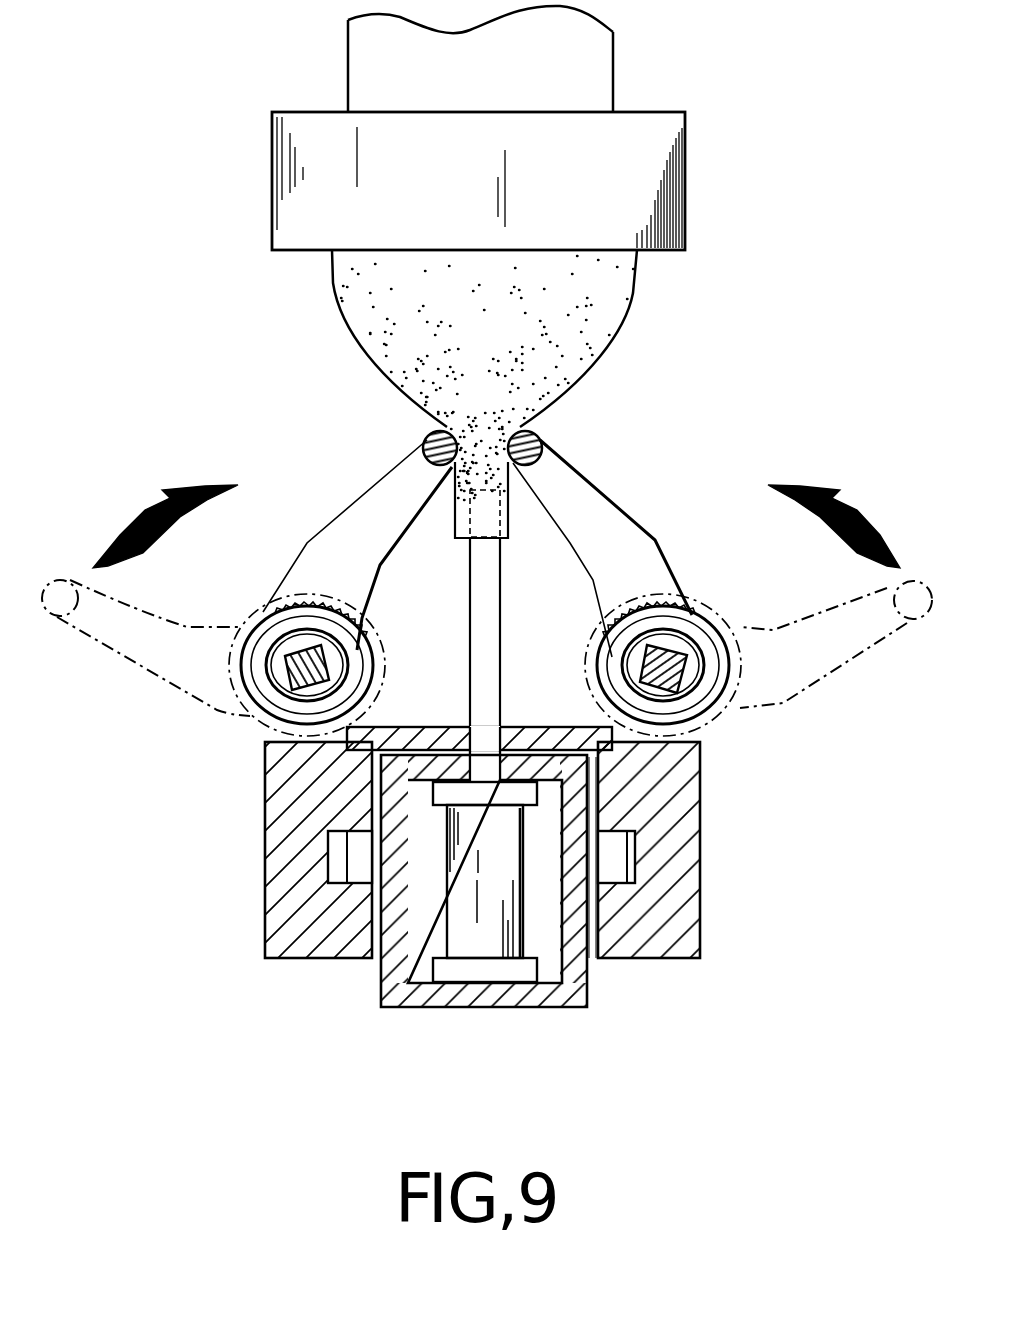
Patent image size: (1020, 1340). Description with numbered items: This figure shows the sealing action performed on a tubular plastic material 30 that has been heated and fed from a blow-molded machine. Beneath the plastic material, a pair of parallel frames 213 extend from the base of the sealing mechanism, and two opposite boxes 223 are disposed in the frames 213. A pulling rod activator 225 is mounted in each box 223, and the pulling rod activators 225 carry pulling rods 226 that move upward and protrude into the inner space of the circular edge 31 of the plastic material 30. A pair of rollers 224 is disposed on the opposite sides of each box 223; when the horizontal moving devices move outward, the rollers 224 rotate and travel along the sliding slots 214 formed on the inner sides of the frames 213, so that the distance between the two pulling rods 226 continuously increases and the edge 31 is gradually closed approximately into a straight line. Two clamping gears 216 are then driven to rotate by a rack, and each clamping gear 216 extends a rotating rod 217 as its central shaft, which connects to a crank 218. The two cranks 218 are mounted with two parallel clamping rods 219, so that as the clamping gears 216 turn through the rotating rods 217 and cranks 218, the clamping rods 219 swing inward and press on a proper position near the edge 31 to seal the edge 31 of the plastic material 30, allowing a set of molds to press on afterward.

The tubular plastic material 30 is at (617, 277).
The clamping rods 219 is at (543, 437).
The circular edge 31 is at (513, 537).
The pulling rods 226 is at (483, 622).
The crank 218 is at (638, 560).
The clamping gear 216 is at (647, 595).
The rotating rod 217 is at (297, 657).
The sliding slots 214 is at (637, 848).
The frames 213 is at (283, 851).
The pulling rod activator 225 is at (462, 907).
The rollers 224 is at (608, 880).
The box 223 is at (503, 997).